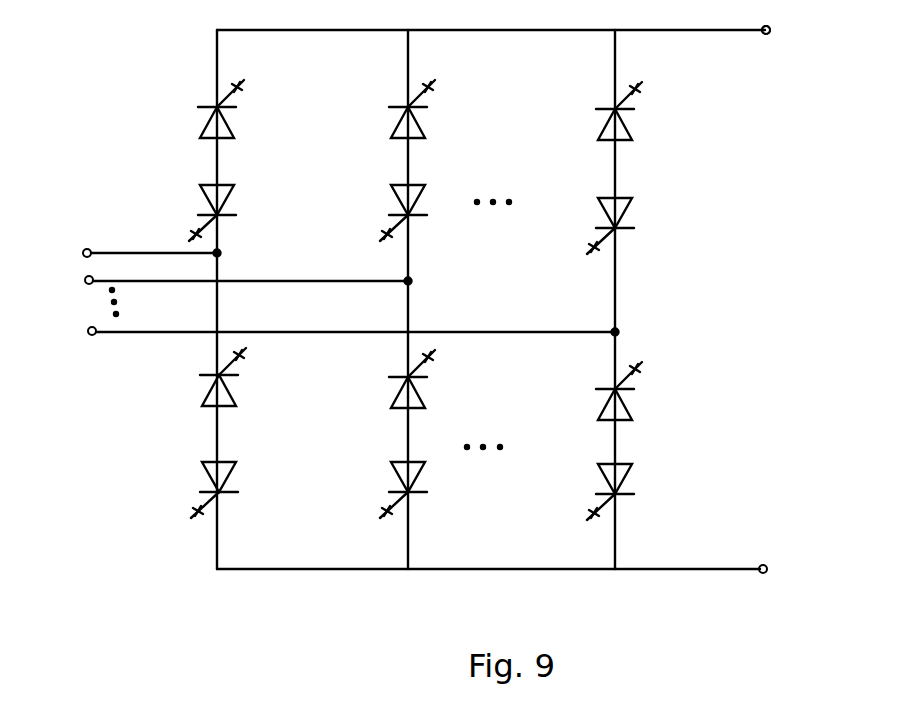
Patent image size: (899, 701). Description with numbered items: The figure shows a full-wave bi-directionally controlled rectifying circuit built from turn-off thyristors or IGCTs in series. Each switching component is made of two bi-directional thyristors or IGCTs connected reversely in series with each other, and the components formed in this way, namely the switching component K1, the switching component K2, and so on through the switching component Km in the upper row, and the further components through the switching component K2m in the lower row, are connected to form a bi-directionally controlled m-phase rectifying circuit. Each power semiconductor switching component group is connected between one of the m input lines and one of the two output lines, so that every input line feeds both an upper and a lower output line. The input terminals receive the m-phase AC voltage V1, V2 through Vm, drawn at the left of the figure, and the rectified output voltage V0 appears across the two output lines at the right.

The switching component K1 is at (191, 160).
The switching component K2 is at (389, 160).
The switching component Km is at (596, 168).
The switching component K2m is at (595, 441).
The output voltage V0 is at (793, 34).
The AC voltage V1 is at (128, 250).
The AC voltage V2 is at (223, 286).
The AC voltage Vm is at (327, 330).